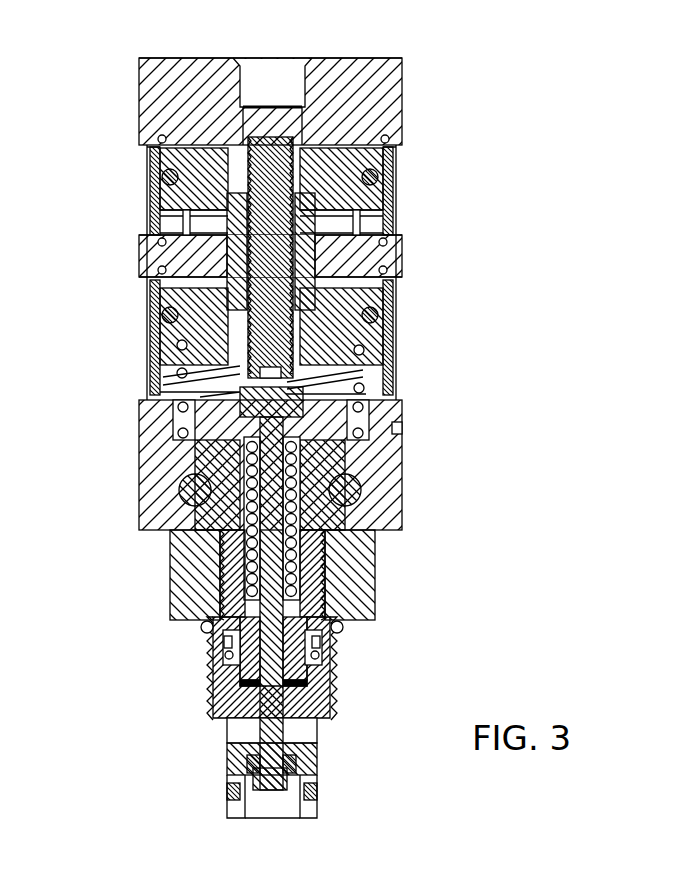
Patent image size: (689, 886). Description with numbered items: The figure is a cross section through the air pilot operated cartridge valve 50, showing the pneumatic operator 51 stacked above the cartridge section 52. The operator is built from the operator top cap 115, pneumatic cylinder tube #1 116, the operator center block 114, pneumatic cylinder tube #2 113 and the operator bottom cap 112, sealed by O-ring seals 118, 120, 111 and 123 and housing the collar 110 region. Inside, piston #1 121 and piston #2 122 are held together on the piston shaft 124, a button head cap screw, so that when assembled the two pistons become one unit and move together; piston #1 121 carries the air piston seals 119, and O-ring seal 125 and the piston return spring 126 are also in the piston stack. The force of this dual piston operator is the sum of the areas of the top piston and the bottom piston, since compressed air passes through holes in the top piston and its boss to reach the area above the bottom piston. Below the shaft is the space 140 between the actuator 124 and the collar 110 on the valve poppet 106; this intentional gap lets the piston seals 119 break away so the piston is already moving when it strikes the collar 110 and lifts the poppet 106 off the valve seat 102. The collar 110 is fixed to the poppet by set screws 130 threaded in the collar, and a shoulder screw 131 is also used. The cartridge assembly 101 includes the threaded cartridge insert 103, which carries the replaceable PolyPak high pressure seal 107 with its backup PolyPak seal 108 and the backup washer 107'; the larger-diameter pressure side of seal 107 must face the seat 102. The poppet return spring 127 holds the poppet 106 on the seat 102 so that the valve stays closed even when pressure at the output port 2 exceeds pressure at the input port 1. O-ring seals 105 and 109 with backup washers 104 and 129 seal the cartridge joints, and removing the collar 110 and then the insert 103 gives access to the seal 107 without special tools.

The input port 1 is at (267, 810).
The output port 2 is at (308, 742).
The valve assembly 50 is at (512, 84).
The upper actuator section 51 is at (432, 65).
The lower valve section 52 is at (410, 613).
The cartridge assembly 101 is at (368, 570).
The valve seat 102 is at (253, 765).
The cartridge insert 103 is at (395, 462).
The backup washer 104 is at (226, 783).
The O-ring seal 105 is at (315, 793).
The valve poppet 106 is at (277, 730).
The PolyPak high pressure seal 107 is at (227, 614).
The backup washer 107' is at (235, 678).
The PolyPak backup seal 108 is at (214, 628).
The O-ring seal 109 is at (343, 628).
The collar 110 is at (390, 375).
The O-ring seal 111 is at (392, 428).
The operator bottom cap 112 is at (400, 517).
The pneumatic cylinder tube #2 113 is at (165, 300).
The operator center block 114 is at (150, 254).
The operator top cap 115 is at (150, 73).
The pneumatic cylinder tube #1 116 is at (156, 167).
The O-ring seal 118 is at (160, 137).
The O-ring seal 119 is at (158, 185).
The O-ring seal 120 is at (390, 272).
The piston #1 121 is at (170, 218).
The piston #2 122 is at (200, 365).
The O-ring seal 123 is at (165, 323).
The piston shaft 124 is at (280, 136).
The O-ring seal 125 is at (178, 372).
The piston return spring 126 is at (180, 390).
The poppet return spring 127 is at (240, 543).
The backup washer 129 is at (333, 643).
The set screw 130 is at (215, 452).
The shoulder screw 131 is at (362, 486).
The space 140 is at (310, 390).